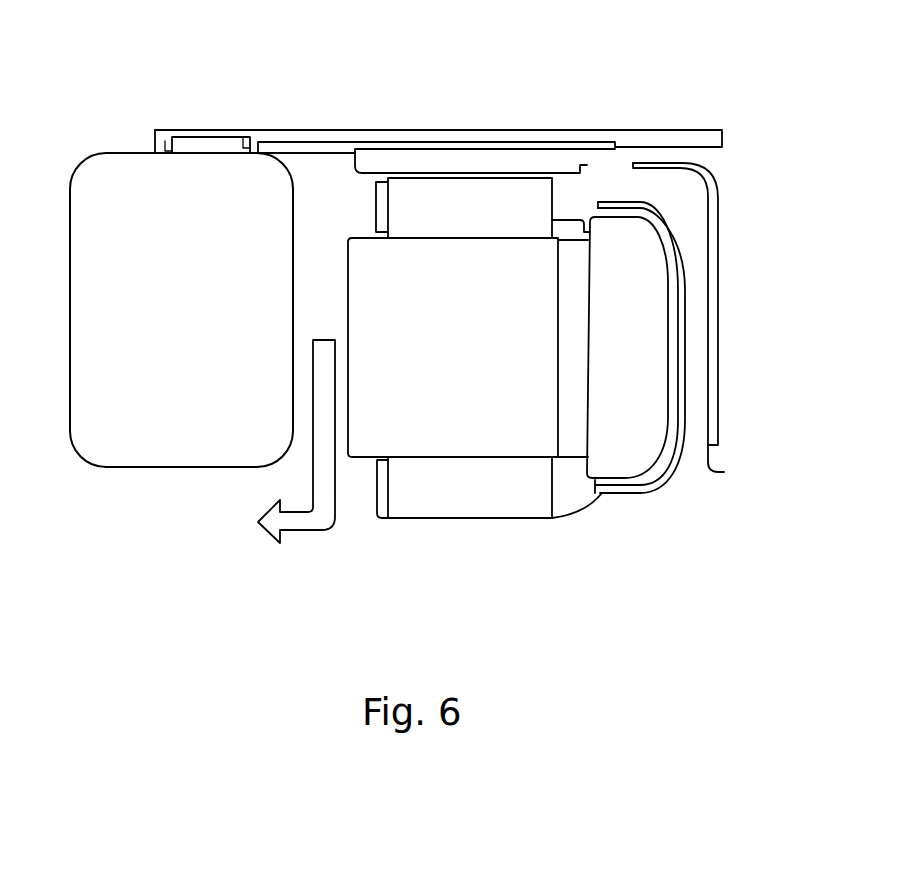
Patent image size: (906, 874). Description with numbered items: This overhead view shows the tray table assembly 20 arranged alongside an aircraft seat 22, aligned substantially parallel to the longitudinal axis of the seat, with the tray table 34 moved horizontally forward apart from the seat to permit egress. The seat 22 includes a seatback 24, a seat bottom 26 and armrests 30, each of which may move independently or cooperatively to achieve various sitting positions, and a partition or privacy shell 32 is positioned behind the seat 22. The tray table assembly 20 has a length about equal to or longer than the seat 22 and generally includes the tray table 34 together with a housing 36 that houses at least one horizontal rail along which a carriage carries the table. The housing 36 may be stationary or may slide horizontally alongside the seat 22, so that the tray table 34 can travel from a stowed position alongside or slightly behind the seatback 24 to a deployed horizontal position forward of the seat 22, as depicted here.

The tray table assembly 20 is at (432, 319).
The aircraft seat 22 is at (525, 344).
The seatback 24 is at (645, 443).
The seat bottom 26 is at (400, 420).
The armrests 30 is at (517, 197).
The privacy shell 32 is at (719, 339).
The tray table 34 is at (222, 425).
The housing 36 is at (428, 135).